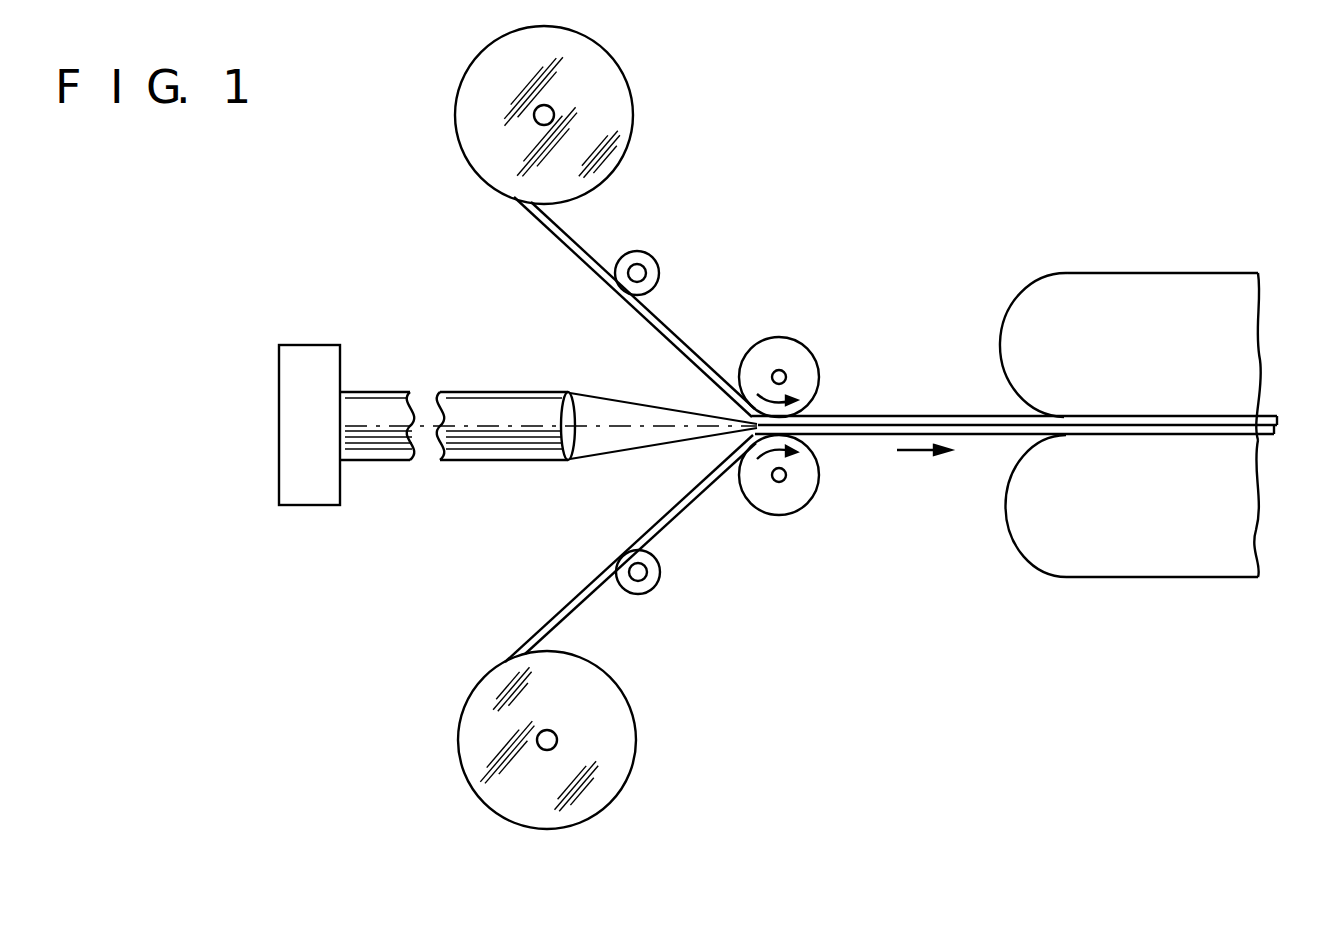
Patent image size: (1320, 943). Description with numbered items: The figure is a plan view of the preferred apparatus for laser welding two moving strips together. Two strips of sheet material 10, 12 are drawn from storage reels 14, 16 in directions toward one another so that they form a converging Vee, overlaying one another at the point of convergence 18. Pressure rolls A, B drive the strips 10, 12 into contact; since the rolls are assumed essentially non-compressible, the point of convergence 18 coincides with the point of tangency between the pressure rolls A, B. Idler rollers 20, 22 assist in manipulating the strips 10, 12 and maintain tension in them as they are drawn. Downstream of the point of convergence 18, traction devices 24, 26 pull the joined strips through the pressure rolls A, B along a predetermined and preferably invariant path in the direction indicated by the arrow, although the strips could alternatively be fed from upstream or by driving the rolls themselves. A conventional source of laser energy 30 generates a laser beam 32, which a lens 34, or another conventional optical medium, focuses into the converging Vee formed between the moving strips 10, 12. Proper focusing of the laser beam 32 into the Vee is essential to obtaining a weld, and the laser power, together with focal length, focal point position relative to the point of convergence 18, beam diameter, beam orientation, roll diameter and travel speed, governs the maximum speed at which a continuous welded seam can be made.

The strip of sheet material 10 is at (683, 337).
The strip of sheet material 12 is at (683, 505).
The storage reel 14 is at (634, 103).
The storage reel 16 is at (638, 728).
The point of convergence 18 is at (790, 417).
The idler roller 20 is at (655, 257).
The idler roller 22 is at (638, 594).
The traction device 24 is at (1107, 282).
The traction device 26 is at (1085, 563).
The source of laser energy 30 is at (315, 352).
The laser beam 32 is at (506, 395).
The lens 34 is at (570, 400).
The pressure roll A is at (797, 340).
The pressure roll B is at (783, 516).